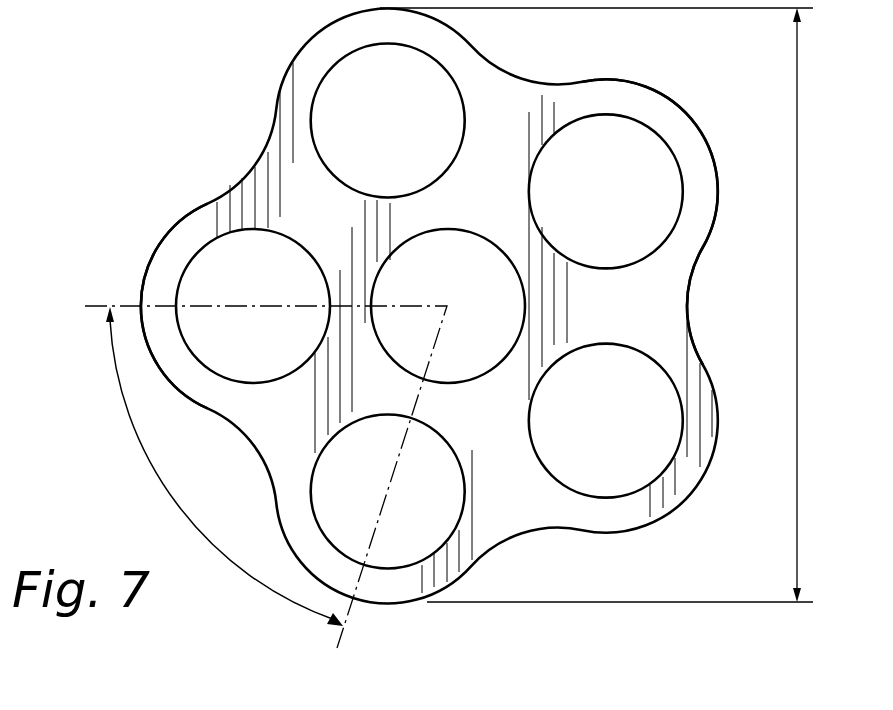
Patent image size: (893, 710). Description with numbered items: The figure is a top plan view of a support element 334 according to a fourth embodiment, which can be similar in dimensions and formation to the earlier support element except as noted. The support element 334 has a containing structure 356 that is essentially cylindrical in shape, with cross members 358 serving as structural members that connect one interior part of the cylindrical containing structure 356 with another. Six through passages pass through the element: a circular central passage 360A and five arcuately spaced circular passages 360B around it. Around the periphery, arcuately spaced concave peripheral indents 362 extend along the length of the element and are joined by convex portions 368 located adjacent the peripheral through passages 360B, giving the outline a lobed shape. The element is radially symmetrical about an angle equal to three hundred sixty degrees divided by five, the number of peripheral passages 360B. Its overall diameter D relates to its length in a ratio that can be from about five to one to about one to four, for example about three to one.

The support element 334 is at (255, 52).
The containing structure 356 is at (158, 263).
The cross members 358 is at (313, 210).
The circular central passage 360A is at (457, 263).
The arcuately spaced circular passages 360B is at (604, 423).
The concave peripheral indents 362 is at (687, 303).
The convex portions 368 is at (688, 115).
The diameter D is at (797, 303).